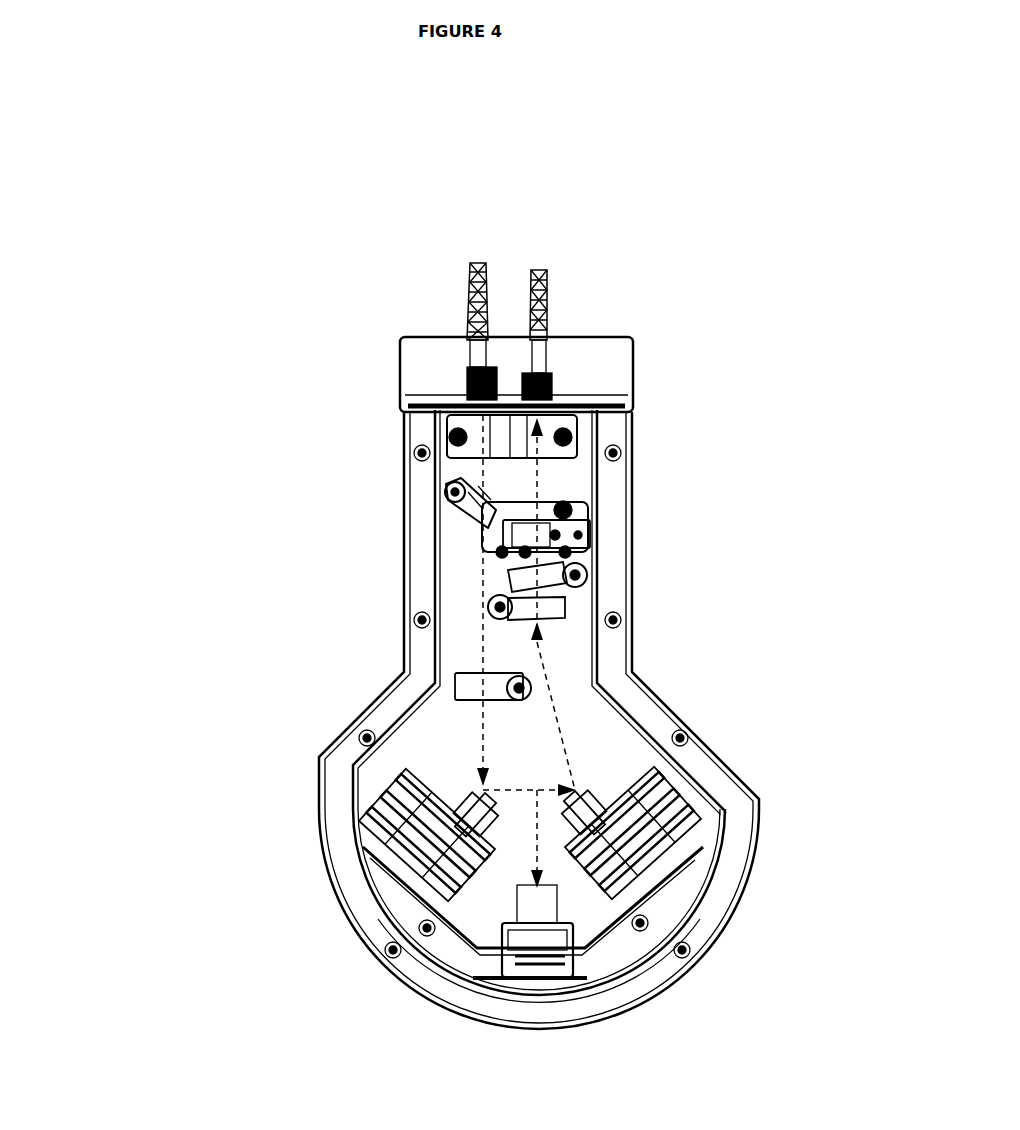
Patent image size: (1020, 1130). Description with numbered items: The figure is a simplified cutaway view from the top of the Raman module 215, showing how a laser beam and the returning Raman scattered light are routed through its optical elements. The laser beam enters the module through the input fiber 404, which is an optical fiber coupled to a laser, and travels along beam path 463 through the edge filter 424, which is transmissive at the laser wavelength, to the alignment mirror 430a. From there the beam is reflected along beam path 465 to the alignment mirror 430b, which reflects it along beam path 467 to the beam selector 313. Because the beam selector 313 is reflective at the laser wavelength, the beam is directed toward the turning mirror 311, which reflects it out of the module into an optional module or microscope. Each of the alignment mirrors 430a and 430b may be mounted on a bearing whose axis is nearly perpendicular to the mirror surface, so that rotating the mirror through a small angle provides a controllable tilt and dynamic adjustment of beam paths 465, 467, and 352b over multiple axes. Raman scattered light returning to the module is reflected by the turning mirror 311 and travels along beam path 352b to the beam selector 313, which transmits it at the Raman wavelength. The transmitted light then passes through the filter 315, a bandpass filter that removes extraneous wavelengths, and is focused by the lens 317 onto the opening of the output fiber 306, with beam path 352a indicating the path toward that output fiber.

The Raman module 215 is at (237, 412).
The input fiber 404 is at (463, 308).
The output fiber 306 is at (550, 310).
The beam path 352a is at (547, 478).
The beam path 463 is at (482, 573).
The lens 317 is at (605, 523).
The filter 315 is at (545, 577).
The beam selector 313 is at (547, 607).
The edge filter 424 is at (467, 677).
The alignment mirror 430a is at (463, 782).
The beam path 467 is at (557, 712).
The alignment mirror 430b is at (573, 780).
The beam path 465 is at (520, 813).
The beam path 352b is at (543, 873).
The turning mirror 311 is at (527, 897).